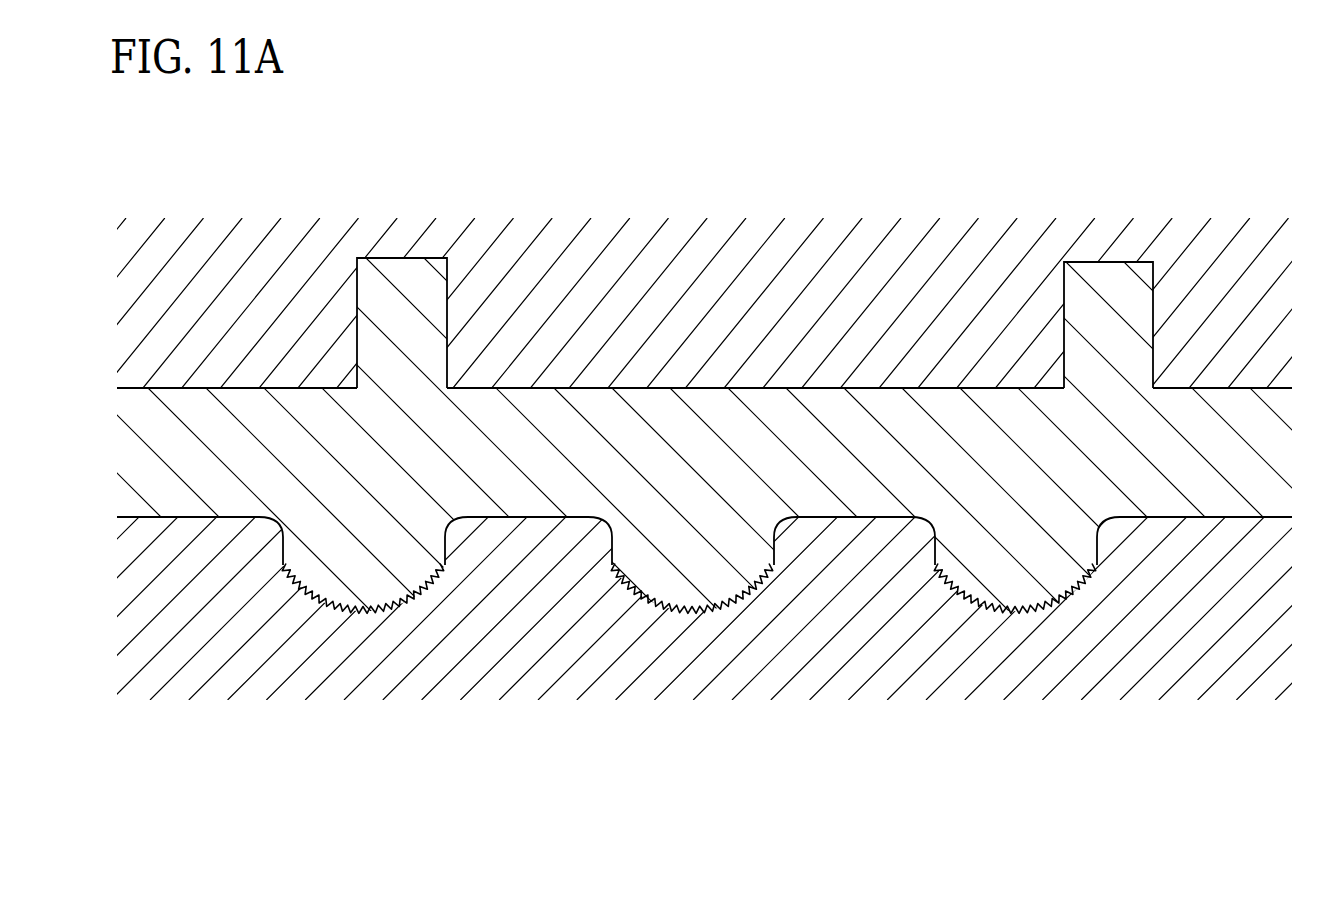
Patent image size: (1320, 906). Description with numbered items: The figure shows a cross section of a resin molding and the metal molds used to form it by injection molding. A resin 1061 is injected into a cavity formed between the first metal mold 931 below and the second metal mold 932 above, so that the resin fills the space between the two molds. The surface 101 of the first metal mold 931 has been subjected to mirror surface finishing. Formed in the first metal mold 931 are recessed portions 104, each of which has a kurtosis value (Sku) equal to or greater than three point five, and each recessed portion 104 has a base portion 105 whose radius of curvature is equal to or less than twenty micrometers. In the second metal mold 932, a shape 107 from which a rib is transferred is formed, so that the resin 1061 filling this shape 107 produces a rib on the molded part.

The second metal mold 932 is at (676, 226).
The first metal mold 931 is at (636, 666).
The resin 1061 is at (205, 430).
The shape from which a rib is transferred 107 is at (393, 258).
The surface 101 is at (194, 518).
The base portion 105 is at (276, 522).
The recessed portion 104 is at (368, 611).